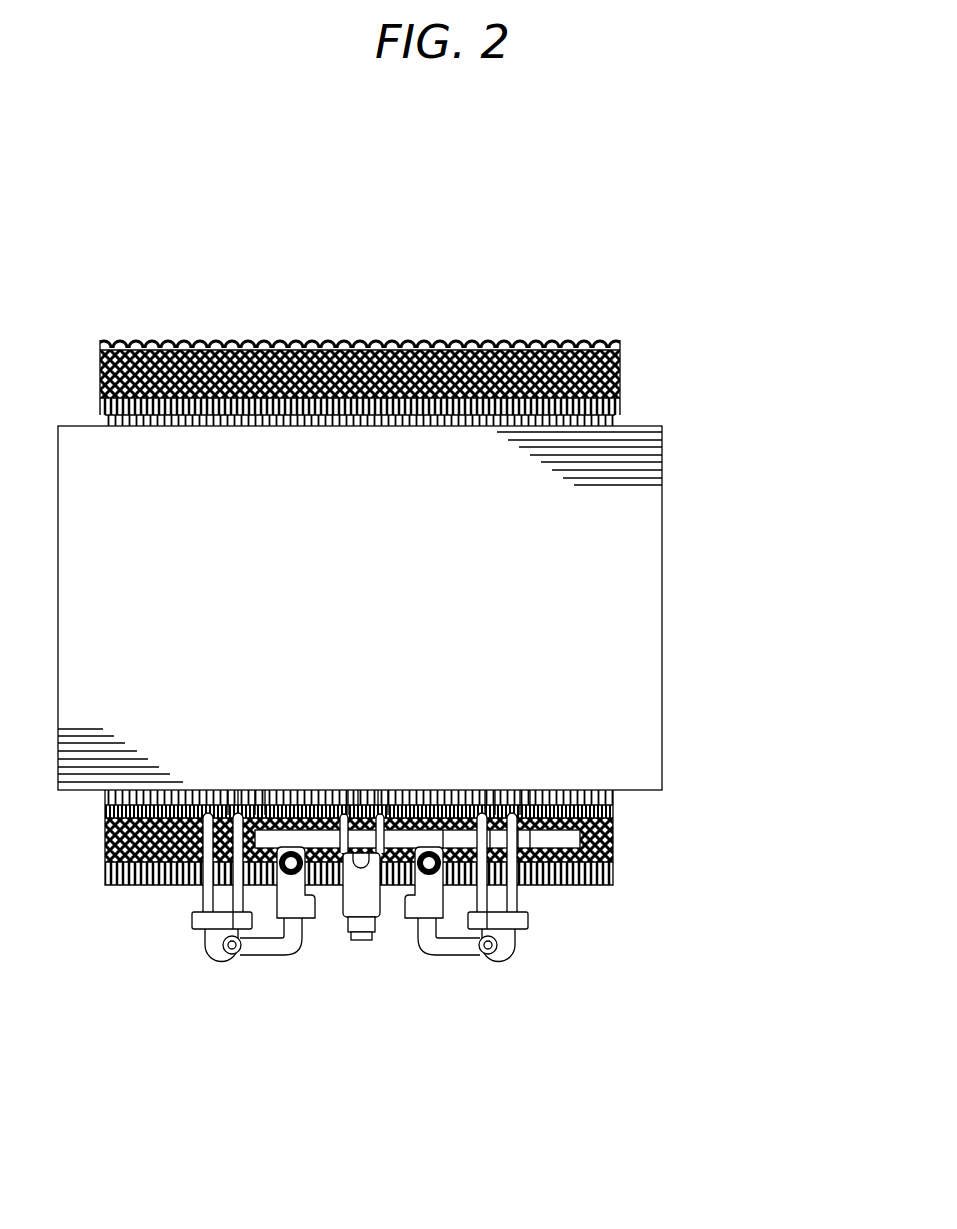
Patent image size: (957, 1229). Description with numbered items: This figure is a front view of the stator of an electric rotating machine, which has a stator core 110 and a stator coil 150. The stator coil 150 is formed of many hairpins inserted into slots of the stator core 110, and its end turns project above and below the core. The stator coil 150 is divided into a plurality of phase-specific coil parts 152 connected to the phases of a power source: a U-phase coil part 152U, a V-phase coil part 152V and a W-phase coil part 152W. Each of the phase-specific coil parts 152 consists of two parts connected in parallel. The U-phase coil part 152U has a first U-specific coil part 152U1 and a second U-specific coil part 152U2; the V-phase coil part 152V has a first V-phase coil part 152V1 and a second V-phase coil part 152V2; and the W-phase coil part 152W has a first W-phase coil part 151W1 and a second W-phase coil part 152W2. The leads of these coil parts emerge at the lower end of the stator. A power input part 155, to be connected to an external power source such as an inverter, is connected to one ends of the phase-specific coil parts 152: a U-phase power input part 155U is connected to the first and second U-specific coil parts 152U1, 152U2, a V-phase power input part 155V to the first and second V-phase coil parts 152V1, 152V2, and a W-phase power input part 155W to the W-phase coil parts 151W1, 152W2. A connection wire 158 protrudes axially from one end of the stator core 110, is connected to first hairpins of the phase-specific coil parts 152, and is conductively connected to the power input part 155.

The stator core 110 is at (674, 526).
The stator coil 150 is at (122, 319).
The phase-specific coil parts 152 is at (555, 708).
The V-phase coil part 152V is at (526, 708).
The first V-phase coil part 152V1 is at (260, 790).
The second V-phase coil part 152V2 is at (233, 790).
The U-phase coil part 152U is at (586, 740).
The first U-specific coil part 152U1 is at (383, 790).
The second U-specific coil part 152U2 is at (353, 790).
The W-phase coil part 152W is at (654, 772).
The first W-phase coil end 151W1 is at (525, 790).
The second W-phase coil part 152W2 is at (490, 790).
The power input part 155 is at (360, 960).
The V-phase power input part 155V is at (218, 955).
The U-phase power input part 155U is at (356, 945).
The W-phase power input part 155W is at (461, 937).
The connection wire 158 is at (240, 912).